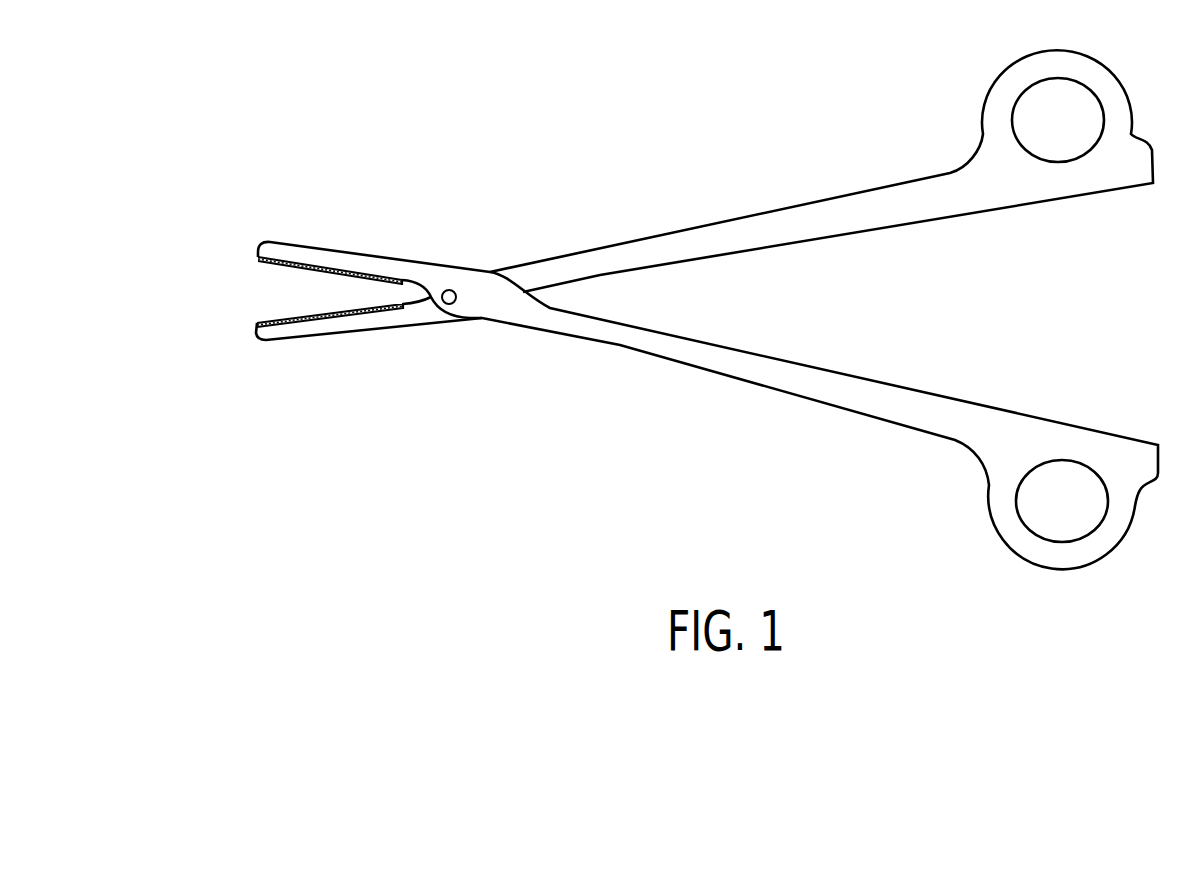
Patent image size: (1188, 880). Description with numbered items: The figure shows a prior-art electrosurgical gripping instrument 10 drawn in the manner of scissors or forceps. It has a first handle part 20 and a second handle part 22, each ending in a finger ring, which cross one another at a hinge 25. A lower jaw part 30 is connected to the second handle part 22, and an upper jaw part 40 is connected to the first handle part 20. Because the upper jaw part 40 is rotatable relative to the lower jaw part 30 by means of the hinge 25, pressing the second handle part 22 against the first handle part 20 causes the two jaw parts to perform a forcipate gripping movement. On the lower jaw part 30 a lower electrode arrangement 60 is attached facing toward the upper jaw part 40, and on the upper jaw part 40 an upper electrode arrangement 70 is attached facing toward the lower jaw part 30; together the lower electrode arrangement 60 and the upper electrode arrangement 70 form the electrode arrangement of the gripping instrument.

The electrosurgical gripping instrument 10 is at (669, 309).
The first handle part 20 is at (896, 392).
The second handle part 22 is at (853, 218).
The hinge 25 is at (447, 305).
The lower jaw part 30 is at (300, 333).
The upper jaw part 40 is at (328, 257).
The lower electrode arrangement 60 is at (257, 328).
The upper electrode arrangement 70 is at (258, 257).